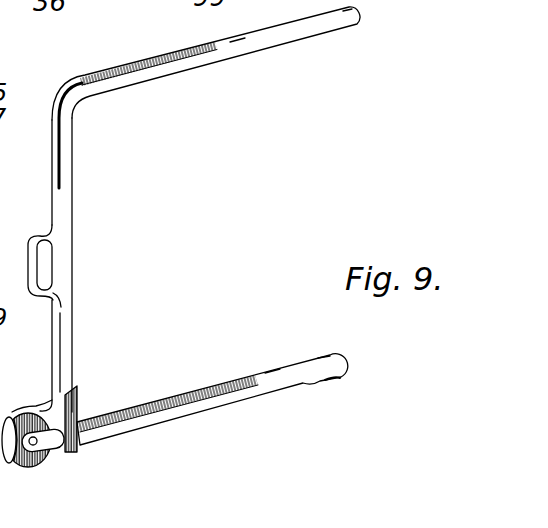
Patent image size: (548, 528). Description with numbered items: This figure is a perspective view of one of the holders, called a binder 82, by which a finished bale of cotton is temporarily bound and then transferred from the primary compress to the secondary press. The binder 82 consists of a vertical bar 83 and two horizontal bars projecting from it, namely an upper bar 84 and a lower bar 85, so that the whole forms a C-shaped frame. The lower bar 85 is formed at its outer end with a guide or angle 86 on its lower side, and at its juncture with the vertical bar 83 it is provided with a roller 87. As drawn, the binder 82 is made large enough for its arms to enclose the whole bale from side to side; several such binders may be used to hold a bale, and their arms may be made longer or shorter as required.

The binder 82 is at (78, 265).
The vertical bar 83 is at (72, 357).
The upper bar 84 is at (206, 97).
The lower bar 85 is at (212, 399).
The guide or angle 86 is at (324, 383).
The roller 87 is at (22, 458).